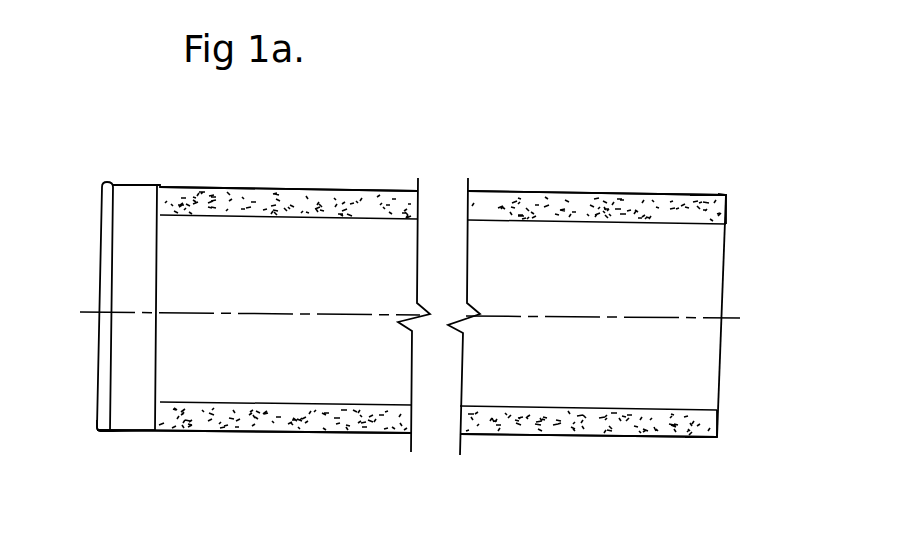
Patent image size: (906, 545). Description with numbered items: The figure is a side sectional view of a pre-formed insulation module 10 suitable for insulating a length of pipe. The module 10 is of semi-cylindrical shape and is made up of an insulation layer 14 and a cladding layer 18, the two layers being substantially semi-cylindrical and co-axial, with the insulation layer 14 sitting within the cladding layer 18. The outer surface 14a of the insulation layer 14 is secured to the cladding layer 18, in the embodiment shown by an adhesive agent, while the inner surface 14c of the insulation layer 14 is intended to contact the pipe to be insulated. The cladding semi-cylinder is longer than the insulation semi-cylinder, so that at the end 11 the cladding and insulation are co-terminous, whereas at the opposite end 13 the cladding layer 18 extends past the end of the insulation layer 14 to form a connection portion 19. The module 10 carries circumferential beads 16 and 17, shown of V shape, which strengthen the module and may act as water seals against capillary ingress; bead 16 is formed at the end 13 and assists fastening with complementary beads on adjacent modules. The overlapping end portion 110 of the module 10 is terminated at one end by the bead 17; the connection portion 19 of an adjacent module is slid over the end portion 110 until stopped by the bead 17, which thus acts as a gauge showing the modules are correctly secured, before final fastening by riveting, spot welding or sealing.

The insulation module 10 is at (665, 169).
The end 11 is at (720, 438).
The end 13 is at (106, 181).
The insulation layer 14 is at (222, 202).
The outer surface 14a is at (287, 190).
The inner surface 14c is at (292, 219).
The circumferential bead 16 is at (98, 432).
The circumferential bead 17 is at (678, 194).
The cladding layer 18 is at (315, 433).
The connection portion 19 is at (135, 431).
The overlapping end portion 110 is at (718, 193).